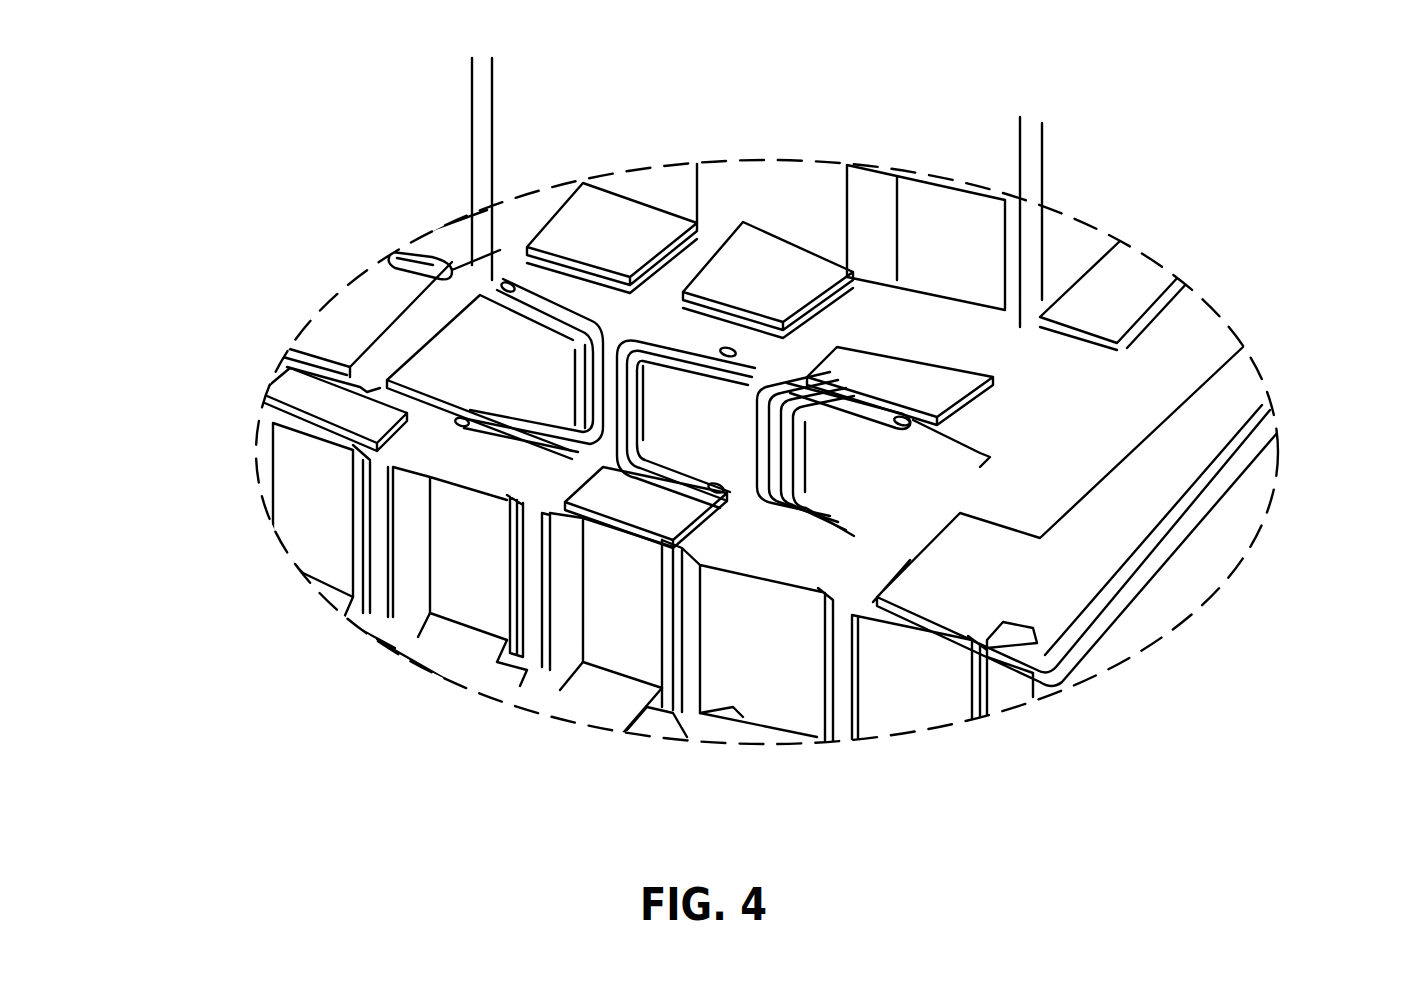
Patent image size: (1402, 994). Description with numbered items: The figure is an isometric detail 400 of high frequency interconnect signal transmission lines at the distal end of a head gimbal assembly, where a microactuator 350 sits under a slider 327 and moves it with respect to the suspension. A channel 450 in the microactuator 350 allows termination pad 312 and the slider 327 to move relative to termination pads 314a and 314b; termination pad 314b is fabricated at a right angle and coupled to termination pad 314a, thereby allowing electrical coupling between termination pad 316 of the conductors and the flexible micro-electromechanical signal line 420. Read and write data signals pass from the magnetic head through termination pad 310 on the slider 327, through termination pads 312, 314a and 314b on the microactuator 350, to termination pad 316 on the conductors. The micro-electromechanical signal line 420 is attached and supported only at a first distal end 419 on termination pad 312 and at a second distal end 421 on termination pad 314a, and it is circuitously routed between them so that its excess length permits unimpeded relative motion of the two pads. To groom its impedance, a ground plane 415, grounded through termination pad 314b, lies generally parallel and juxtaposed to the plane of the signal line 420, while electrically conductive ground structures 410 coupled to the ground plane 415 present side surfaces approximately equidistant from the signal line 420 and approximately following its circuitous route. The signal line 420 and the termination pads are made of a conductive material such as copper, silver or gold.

The detail 400 is at (192, 58).
The termination pad 310 is at (800, 205).
The termination pad 312 is at (770, 290).
The termination pad 314a is at (623, 498).
The termination pad 314b is at (620, 597).
The termination pad 316 is at (563, 695).
The slider 327 is at (1080, 261).
The microactuator 350 is at (1120, 630).
The ground structures 410 is at (697, 400).
The ground plane 415 is at (437, 313).
The first distal end 419 is at (687, 502).
The flexible micro-electromechanical signal line 420 is at (620, 395).
The second distal end 421 is at (777, 373).
The channel 450 is at (494, 92).